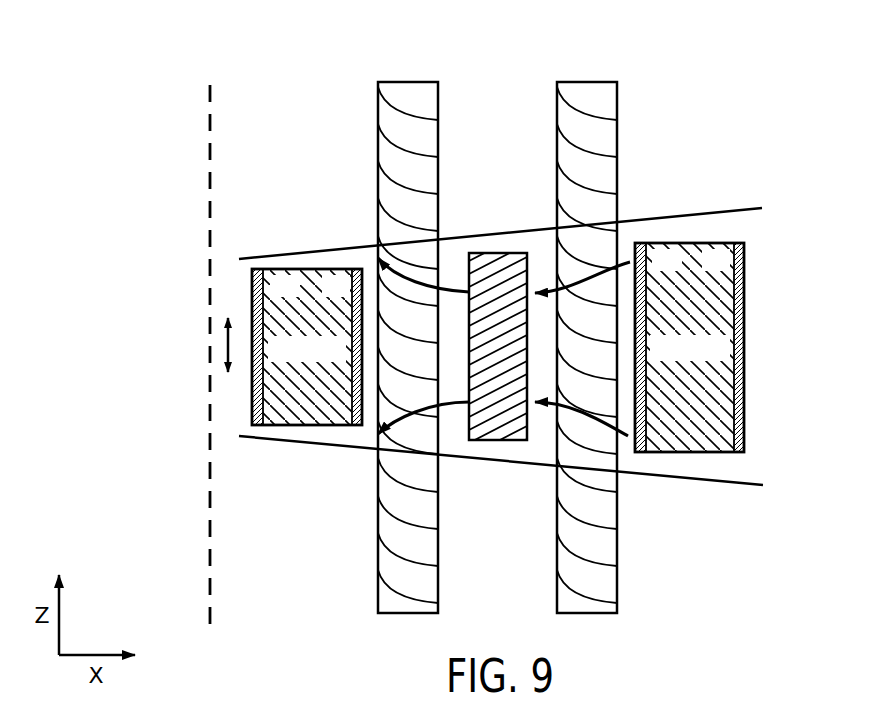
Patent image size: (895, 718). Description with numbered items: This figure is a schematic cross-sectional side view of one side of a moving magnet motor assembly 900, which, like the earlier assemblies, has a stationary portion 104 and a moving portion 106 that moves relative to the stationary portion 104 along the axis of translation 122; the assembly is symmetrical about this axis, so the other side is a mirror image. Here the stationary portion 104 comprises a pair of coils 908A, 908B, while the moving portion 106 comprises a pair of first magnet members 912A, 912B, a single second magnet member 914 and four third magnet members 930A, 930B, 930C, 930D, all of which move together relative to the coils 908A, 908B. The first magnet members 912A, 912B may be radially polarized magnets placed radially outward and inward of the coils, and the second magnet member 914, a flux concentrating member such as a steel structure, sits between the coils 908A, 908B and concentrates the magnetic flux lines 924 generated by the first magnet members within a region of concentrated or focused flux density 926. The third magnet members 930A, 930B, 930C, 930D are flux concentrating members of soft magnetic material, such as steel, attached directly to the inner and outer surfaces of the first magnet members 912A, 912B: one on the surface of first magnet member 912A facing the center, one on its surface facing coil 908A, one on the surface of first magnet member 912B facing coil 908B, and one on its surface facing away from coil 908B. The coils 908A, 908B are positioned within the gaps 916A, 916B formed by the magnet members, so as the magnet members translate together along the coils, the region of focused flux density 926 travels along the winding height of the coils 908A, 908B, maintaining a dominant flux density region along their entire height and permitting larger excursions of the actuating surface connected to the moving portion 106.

The assembly 900 is at (805, 96).
The stationary portion 104 is at (648, 100).
The moving portion 106 is at (775, 279).
The axis of translation 122 is at (212, 137).
The coil 908A is at (409, 82).
The coil 908B is at (586, 82).
The first magnet member 912A is at (311, 268).
The first magnet member 912B is at (688, 242).
The second magnet member 914 is at (483, 253).
The gap 916A is at (361, 440).
The gap 916B is at (627, 452).
The magnetic flux lines 924 is at (552, 283).
The region of concentrated or focused flux density 926 is at (727, 481).
The third magnet member 930A is at (257, 268).
The third magnet member 930B is at (358, 268).
The third magnet member 930C is at (637, 243).
The third magnet member 930D is at (737, 243).